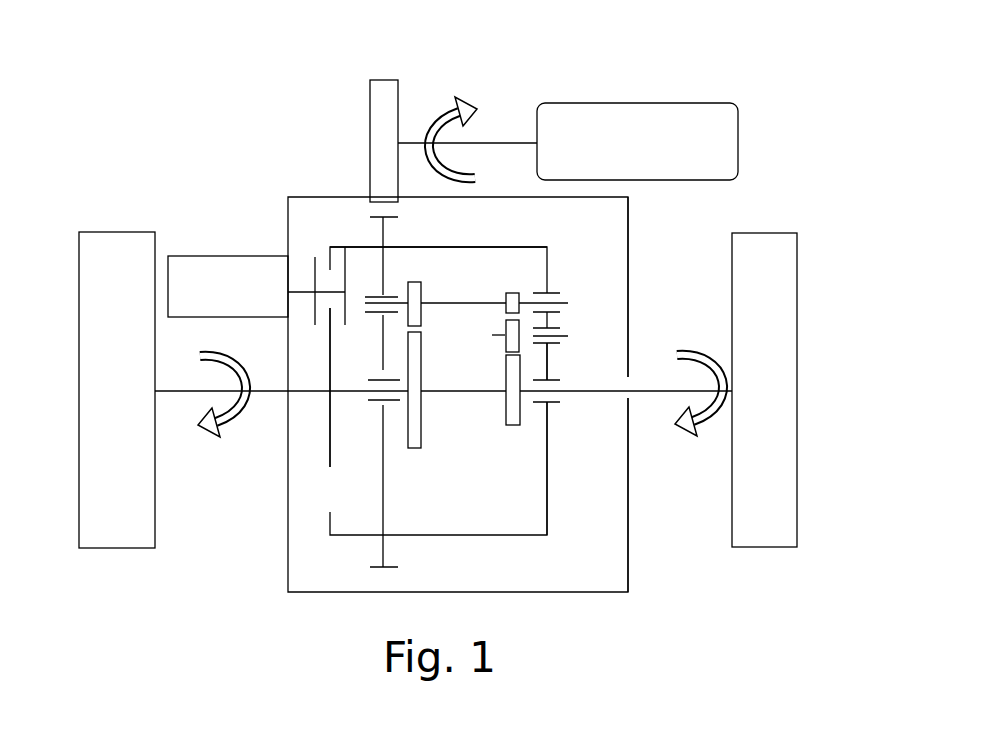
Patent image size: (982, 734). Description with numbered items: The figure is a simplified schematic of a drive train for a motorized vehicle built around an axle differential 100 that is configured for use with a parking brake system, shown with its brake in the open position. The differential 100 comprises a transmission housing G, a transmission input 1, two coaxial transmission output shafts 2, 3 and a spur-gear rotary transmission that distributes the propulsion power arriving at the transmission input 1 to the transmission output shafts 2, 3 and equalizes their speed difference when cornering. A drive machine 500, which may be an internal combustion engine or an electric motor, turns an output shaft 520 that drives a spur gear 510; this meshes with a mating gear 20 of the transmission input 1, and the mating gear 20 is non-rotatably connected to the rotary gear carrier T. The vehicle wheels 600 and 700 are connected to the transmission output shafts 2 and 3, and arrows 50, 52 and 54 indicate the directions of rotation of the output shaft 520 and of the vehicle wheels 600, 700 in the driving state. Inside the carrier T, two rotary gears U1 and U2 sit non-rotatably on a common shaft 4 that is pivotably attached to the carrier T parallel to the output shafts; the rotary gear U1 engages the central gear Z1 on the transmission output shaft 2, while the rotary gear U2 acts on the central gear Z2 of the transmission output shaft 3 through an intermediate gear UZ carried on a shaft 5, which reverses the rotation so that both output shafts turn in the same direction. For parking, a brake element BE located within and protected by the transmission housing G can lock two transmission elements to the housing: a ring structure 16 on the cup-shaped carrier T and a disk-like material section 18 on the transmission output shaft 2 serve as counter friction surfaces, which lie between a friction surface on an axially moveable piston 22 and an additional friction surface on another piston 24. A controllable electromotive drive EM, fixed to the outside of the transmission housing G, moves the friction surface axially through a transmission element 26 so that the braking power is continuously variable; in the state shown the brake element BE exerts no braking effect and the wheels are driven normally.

The transmission input 1 is at (375, 228).
The transmission output shaft 2 is at (277, 393).
The transmission output shaft 3 is at (672, 393).
The shaft 4 is at (455, 303).
The shaft 5 is at (566, 336).
The ring structure 16 is at (330, 252).
The material section 18 is at (332, 466).
The mating gear 20 is at (395, 218).
The piston 22 is at (347, 250).
The piston 24 is at (313, 258).
The transmission element 26 is at (307, 292).
The arrow 50 is at (455, 96).
The arrow 52 is at (218, 438).
The arrow 54 is at (695, 437).
The differential 100 is at (652, 238).
The drive machine 500 is at (637, 141).
The spur gear 510 is at (387, 88).
The output shaft 520 is at (522, 143).
The vehicle wheel 600 is at (118, 548).
The vehicle wheel 700 is at (765, 548).
The electromotive drive EM is at (228, 286).
The brake element BE is at (323, 331).
The transmission housing G is at (628, 278).
The rotary gear carrier T is at (547, 465).
The rotary gear U1 is at (422, 313).
The rotary gear U2 is at (512, 292).
The intermediate gear UZ is at (505, 343).
The central gear Z1 is at (415, 449).
The central gear Z2 is at (513, 426).